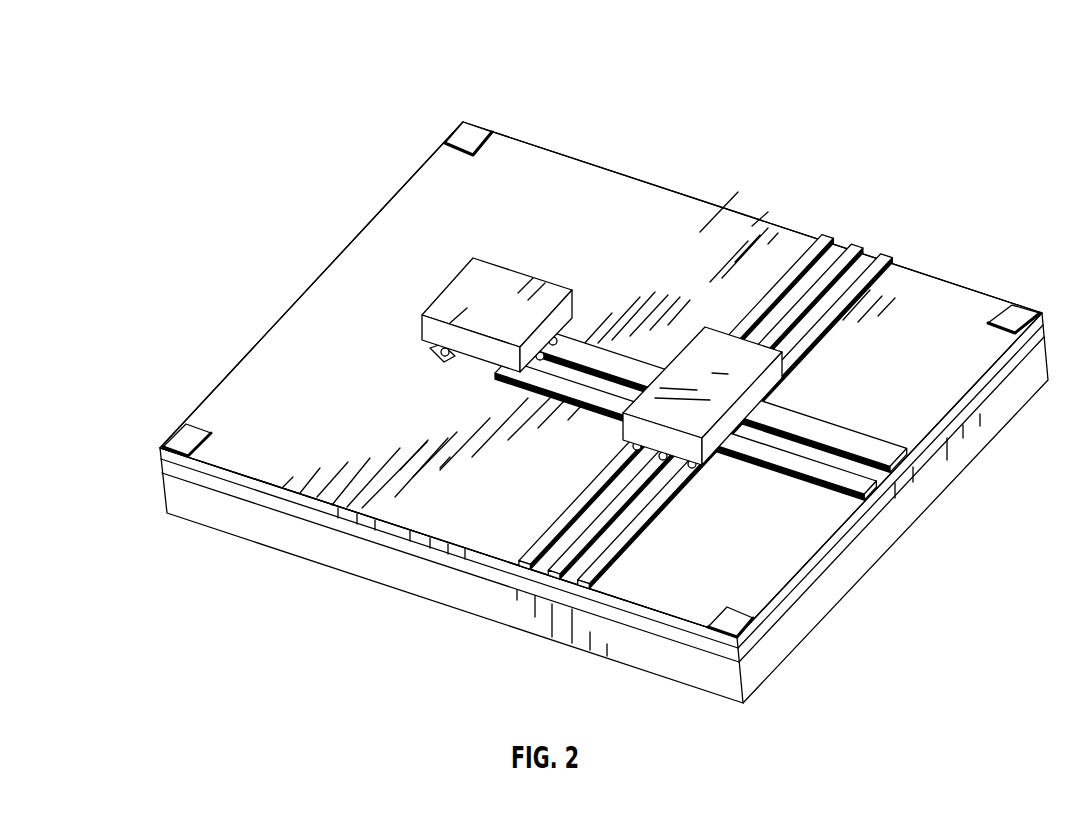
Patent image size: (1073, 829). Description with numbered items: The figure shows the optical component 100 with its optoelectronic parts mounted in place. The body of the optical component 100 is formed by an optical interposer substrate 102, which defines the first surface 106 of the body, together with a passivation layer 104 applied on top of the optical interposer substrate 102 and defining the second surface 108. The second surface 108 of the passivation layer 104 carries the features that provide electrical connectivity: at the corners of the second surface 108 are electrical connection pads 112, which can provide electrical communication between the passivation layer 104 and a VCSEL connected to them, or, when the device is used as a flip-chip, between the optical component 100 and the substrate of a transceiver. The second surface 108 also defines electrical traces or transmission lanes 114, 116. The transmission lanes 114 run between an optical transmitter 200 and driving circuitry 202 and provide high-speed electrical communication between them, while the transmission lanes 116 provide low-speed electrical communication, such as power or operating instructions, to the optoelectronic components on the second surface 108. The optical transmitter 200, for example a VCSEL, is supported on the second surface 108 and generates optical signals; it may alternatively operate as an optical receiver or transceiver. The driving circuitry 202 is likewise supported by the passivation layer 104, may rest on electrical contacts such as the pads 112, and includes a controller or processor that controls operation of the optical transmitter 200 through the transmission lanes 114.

The optical component 100 is at (190, 86).
The optical interposer substrate 102 is at (833, 599).
The passivation layer 104 is at (231, 362).
The first surface 106 is at (509, 628).
The second surface 108 is at (313, 320).
The electrical connection pads 112 is at (470, 142).
The transmission lanes 114 is at (631, 355).
The transmission lanes 116 is at (842, 256).
The optical transmitter 200 is at (502, 292).
The driving circuitry 202 is at (733, 388).